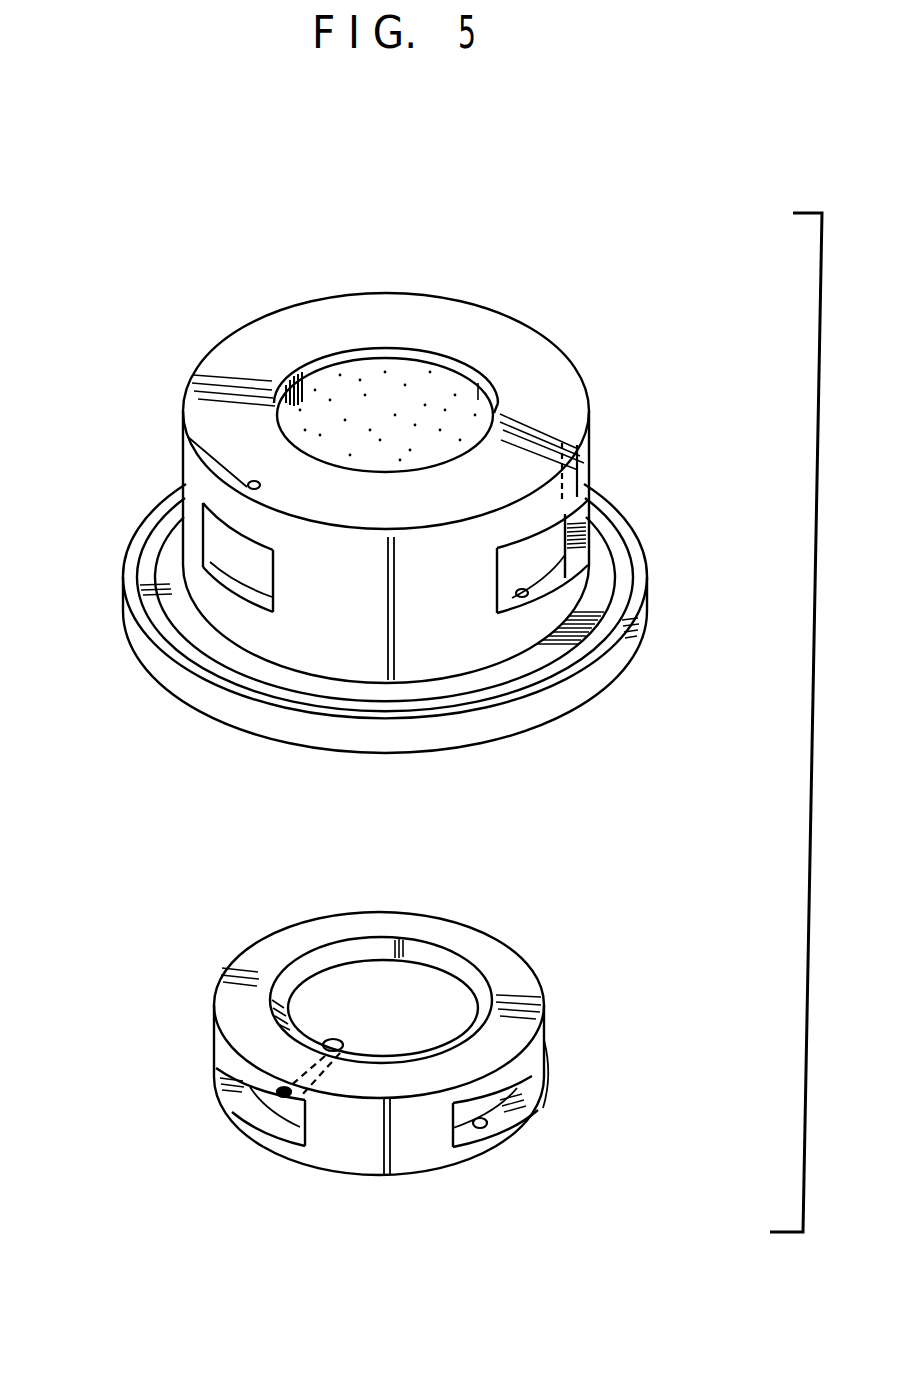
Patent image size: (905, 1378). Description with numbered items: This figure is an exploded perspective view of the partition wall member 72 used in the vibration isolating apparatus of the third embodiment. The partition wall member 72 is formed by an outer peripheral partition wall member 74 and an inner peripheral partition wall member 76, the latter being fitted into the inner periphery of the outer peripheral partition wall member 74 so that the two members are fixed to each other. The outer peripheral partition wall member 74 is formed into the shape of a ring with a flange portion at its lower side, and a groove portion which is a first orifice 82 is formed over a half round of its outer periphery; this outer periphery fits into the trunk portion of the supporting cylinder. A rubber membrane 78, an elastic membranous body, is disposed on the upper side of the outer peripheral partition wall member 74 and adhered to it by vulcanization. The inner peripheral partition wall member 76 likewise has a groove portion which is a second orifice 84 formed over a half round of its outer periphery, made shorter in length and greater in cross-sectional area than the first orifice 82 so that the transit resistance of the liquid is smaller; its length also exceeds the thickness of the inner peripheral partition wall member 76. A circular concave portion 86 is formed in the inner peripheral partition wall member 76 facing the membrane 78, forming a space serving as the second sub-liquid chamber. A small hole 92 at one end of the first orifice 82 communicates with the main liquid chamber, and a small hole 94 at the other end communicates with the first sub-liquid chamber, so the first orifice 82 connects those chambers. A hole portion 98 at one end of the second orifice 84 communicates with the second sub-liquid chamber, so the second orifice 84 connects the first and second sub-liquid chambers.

The partition wall member 72 is at (175, 1005).
The outer peripheral partition wall member 74 is at (577, 365).
The inner peripheral partition wall member 76 is at (513, 951).
The rubber membrane 78 is at (400, 407).
The first orifice 82 is at (590, 487).
The second orifice 84 is at (522, 1088).
The circular concave portion 86 is at (427, 978).
The small hole 92 is at (255, 483).
The small hole 94 is at (528, 593).
The hole portion 98 is at (333, 1043).